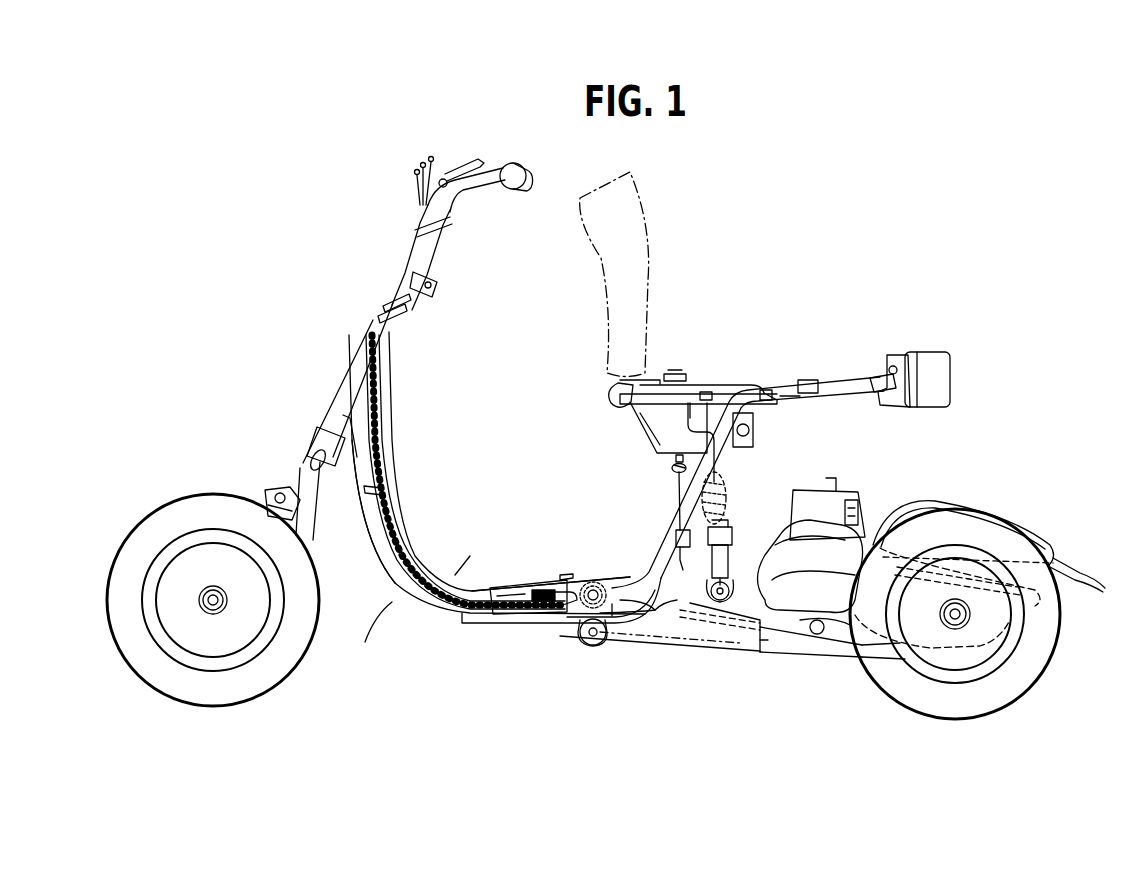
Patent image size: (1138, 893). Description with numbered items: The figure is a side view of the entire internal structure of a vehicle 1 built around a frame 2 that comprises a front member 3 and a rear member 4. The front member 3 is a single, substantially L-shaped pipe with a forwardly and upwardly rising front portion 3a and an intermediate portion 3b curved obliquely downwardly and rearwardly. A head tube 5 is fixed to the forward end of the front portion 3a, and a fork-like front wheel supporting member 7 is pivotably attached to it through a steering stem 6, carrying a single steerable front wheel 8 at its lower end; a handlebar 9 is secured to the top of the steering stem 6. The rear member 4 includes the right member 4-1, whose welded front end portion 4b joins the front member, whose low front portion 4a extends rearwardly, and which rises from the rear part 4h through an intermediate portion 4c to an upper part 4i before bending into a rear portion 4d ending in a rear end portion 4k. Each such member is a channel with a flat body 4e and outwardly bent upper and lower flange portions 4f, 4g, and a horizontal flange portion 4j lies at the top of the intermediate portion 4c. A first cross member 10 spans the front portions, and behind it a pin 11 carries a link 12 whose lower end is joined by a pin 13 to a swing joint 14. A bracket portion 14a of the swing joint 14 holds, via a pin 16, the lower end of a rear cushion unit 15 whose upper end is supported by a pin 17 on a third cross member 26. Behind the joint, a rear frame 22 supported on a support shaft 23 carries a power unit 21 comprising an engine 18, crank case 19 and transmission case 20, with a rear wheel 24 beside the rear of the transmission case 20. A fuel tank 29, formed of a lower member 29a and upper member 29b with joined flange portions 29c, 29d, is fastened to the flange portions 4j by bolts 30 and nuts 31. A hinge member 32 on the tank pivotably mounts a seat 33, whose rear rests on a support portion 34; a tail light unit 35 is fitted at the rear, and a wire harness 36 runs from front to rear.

The vehicle 1 is at (387, 598).
The frame 2 is at (462, 576).
The front member 3 is at (410, 520).
The front portion 3a is at (376, 425).
The intermediate portion 3b is at (426, 600).
The wire harness 36 is at (400, 558).
The rear member 4 is at (762, 478).
The front portion 4a is at (517, 586).
The welded front end portion 4b is at (475, 624).
The intermediate portion 4c is at (680, 520).
The rear portion 4d is at (878, 378).
The flat body 4e is at (644, 615).
The upper flange portion 4f is at (575, 573).
The lower flange portion 4g is at (580, 648).
The rear part of front portion 4h is at (660, 616).
The upper part of intermediate portion 4i is at (694, 440).
The horizontal flange portion 4j is at (776, 394).
The rear end portion 4k is at (890, 405).
The right member 4-1 is at (668, 627).
The head tube 5 is at (352, 372).
The steering stem 6 is at (402, 338).
The front wheel supporting member 7 is at (312, 522).
The front wheel 8 is at (196, 512).
The handlebar 9 is at (506, 169).
The first cross member 10 is at (562, 606).
The pin 11 is at (595, 582).
The link 12 is at (613, 635).
The pin 13 is at (594, 646).
The swing joint 14 is at (748, 645).
The bracket portion 14a is at (770, 598).
The rear cushion unit 15 is at (733, 530).
The pin 16 is at (722, 604).
The pin 17 is at (730, 500).
The engine 18 is at (835, 488).
The crank case 19 is at (814, 650).
The transmission case 20 is at (936, 650).
The power unit 21 is at (885, 500).
The rear frame 22 is at (840, 660).
The support shaft 23 is at (762, 655).
The rear wheel 24 is at (1030, 673).
The third cross member 26 is at (672, 470).
The fuel tank 29 is at (640, 413).
The lower member 29a is at (648, 430).
The upper member 29b is at (748, 384).
The lower flange portion 29c is at (613, 393).
The upper flange portion 29d is at (628, 378).
The bolt 30 is at (707, 392).
The nut 31 is at (728, 418).
The hinge member 32 is at (644, 378).
The seat 33 is at (648, 226).
The support portion 34 is at (810, 380).
The tail light unit 35 is at (945, 380).